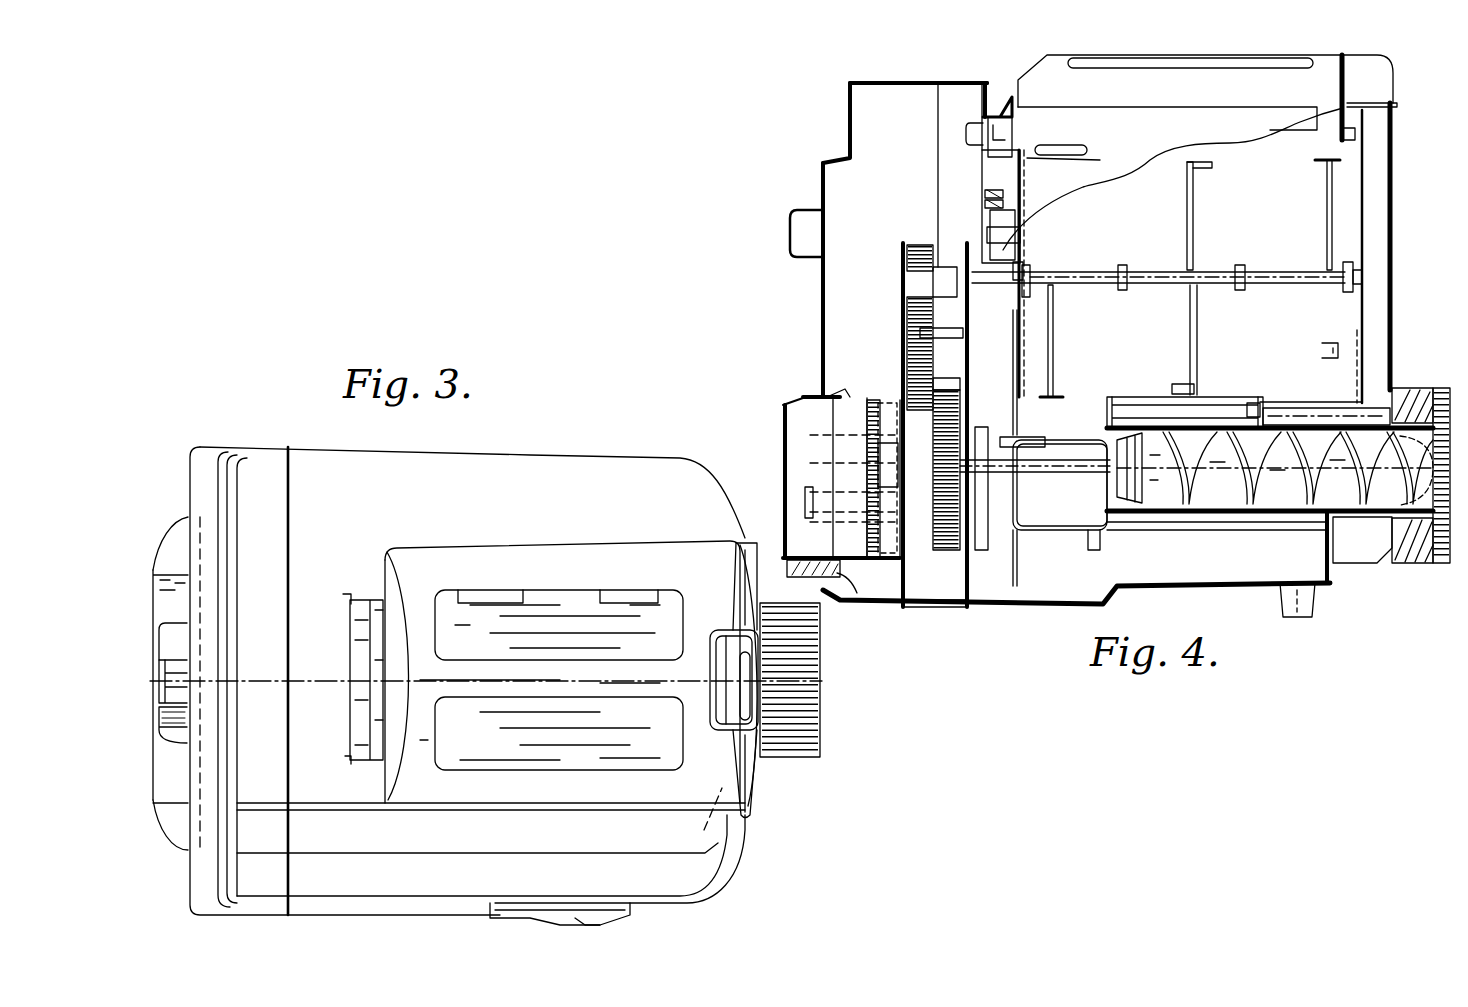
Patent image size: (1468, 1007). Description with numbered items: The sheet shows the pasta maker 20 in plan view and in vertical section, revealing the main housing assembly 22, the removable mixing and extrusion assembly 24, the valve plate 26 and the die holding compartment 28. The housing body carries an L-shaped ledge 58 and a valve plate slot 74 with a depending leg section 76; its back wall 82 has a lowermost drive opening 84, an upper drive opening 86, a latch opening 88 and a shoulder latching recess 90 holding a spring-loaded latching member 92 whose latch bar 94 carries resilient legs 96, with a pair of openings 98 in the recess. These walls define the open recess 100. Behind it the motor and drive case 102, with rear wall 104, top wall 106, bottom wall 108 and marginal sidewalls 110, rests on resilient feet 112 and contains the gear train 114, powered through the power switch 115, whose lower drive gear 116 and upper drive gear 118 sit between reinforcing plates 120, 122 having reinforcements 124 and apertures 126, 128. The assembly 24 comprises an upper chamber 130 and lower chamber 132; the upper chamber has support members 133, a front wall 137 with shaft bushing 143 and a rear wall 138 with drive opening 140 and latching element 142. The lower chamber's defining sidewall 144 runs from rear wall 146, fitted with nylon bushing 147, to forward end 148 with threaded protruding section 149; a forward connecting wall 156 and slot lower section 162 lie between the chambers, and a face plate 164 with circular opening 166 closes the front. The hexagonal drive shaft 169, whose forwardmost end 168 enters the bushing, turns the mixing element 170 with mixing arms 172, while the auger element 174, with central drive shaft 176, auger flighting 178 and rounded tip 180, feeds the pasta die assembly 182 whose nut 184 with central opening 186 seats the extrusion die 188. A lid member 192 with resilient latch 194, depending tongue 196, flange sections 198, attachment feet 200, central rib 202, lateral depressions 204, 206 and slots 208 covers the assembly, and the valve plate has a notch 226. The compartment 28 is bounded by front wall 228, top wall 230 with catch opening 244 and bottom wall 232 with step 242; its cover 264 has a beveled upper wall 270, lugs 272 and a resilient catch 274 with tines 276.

In FIG. 3, the pasta maker 20 is at (183, 852).
In FIG. 4, the pasta maker 20 is at (1405, 129).
In FIG. 4, the main housing assembly 22 is at (822, 124).
In FIG. 4, the mixing and extrusion assembly 24 is at (1415, 338).
In FIG. 3, the valve plate 26 is at (508, 922).
In FIG. 4, the die holding compartment 28 is at (724, 397).
In FIG. 4, the L-shaped ledge 58 is at (1173, 179).
In FIG. 4, the valve plate slot 74 is at (1130, 397).
In FIG. 4, the depending leg section 76 is at (1267, 403).
In FIG. 4, the back wall 82 is at (1013, 425).
In FIG. 4, the lowermost drive opening 84 is at (1040, 473).
In FIG. 4, the upper drive opening 86 is at (1020, 268).
In FIG. 4, the latch opening 88 is at (1008, 213).
In FIG. 4, the shoulder latching recess 90 is at (983, 157).
In FIG. 4, the latching member 92 is at (1008, 160).
In FIG. 3, the latch bar 94 is at (360, 640).
In FIG. 4, the resilient legs 96 is at (1010, 283).
In FIG. 3, the openings 98 is at (345, 596).
In FIG. 4, the recess 100 is at (1340, 187).
In FIG. 4, the motor and drive case 102 is at (808, 289).
In FIG. 3, the rear wall 104 is at (190, 478).
In FIG. 4, the rear wall 104 is at (827, 354).
In FIG. 4, the top wall 106 is at (877, 83).
In FIG. 4, the bottom wall 108 is at (900, 610).
In FIG. 3, the marginal sidewalls 110 is at (268, 447).
In FIG. 4, the marginal sidewalls 110 is at (857, 178).
In FIG. 4, the resilient feet 112 is at (963, 609).
In FIG. 4, the gear train 114 is at (919, 218).
In FIG. 3, the power switch 115 is at (605, 918).
In FIG. 4, the lower drive gear 116 is at (950, 530).
In FIG. 4, the upper drive gear 118 is at (923, 257).
In FIG. 4, the internal reinforcing plate 120 is at (913, 317).
In FIG. 4, the internal reinforcing plate 122 is at (977, 584).
In FIG. 4, the reinforcements 124 is at (930, 297).
In FIG. 4, the aperture 126 is at (1010, 420).
In FIG. 4, the aperture 128 is at (963, 273).
In FIG. 4, the upper chamber 130 is at (1235, 158).
In FIG. 4, the lower chamber 132 is at (1160, 437).
In FIG. 4, the support members 133 is at (1077, 147).
In FIG. 4, the front wall 137 is at (1320, 160).
In FIG. 4, the rear wall 138 is at (1033, 344).
In FIG. 4, the drive opening 140 is at (1030, 276).
In FIG. 4, the latching element 142 is at (1002, 233).
In FIG. 4, the shaft bushing 143 is at (1353, 270).
In FIG. 4, the defining sidewall 144 is at (1247, 522).
In FIG. 4, the rear wall 146 is at (1093, 504).
In FIG. 4, the nylon bushing 147 is at (1127, 494).
In FIG. 4, the forward end 148 is at (1407, 539).
In FIG. 4, the threaded protruding section 149 is at (1400, 397).
In FIG. 4, the forward connecting wall 156 is at (1303, 408).
In FIG. 4, the lower section 162 is at (1230, 400).
In FIG. 4, the face plate 164 is at (1393, 251).
In FIG. 4, the circular opening 166 is at (1363, 336).
In FIG. 4, the forwardmost end 168 is at (1367, 278).
In FIG. 4, the drive shaft 169 is at (1035, 311).
In FIG. 4, the mixing element 170 is at (1246, 251).
In FIG. 4, the mixing arms 172 is at (1193, 190).
In FIG. 4, the auger element 174 is at (1240, 500).
In FIG. 4, the central drive shaft 176 is at (1067, 468).
In FIG. 4, the auger flighting 178 is at (1307, 501).
In FIG. 4, the rounded tip 180 is at (1447, 397).
In FIG. 4, the pasta die assembly 182 is at (1455, 546).
In FIG. 3, the nut 184 is at (775, 745).
In FIG. 4, the nut 184 is at (1407, 538).
In FIG. 4, the central opening 186 is at (1433, 541).
In FIG. 4, the extrusion die 188 is at (1440, 471).
In FIG. 3, the lid member 192 is at (720, 795).
In FIG. 4, the lid member 192 is at (1157, 63).
In FIG. 3, the resilient latch 194 is at (725, 645).
In FIG. 4, the resilient latch 194 is at (1367, 80).
In FIG. 4, the depending tongue 196 is at (1393, 162).
In FIG. 4, the flange sections 198 is at (1303, 117).
In FIG. 4, the attachment feet 200 is at (1000, 107).
In FIG. 3, the central rib 202 is at (540, 670).
In FIG. 3, the lateral depression 204 is at (545, 600).
In FIG. 3, the lateral depression 206 is at (636, 755).
In FIG. 3, the slots 208 is at (490, 598).
In FIG. 4, the notch 226 is at (783, 444).
In FIG. 4, the front wall 228 is at (938, 612).
In FIG. 4, the top wall 230 is at (820, 417).
In FIG. 4, the bottom wall 232 is at (837, 576).
In FIG. 4, the step 242 is at (813, 553).
In FIG. 4, the catch opening 244 is at (837, 401).
In FIG. 3, the cover 264 is at (146, 573).
In FIG. 4, the cover 264 is at (776, 464).
In FIG. 3, the beveled upper wall 270 is at (175, 605).
In FIG. 4, the beveled upper wall 270 is at (797, 407).
In FIG. 4, the lugs 272 is at (845, 598).
In FIG. 3, the resilient catch 274 is at (175, 680).
In FIG. 4, the resilient catch 274 is at (800, 391).
In FIG. 4, the tines 276 is at (827, 397).